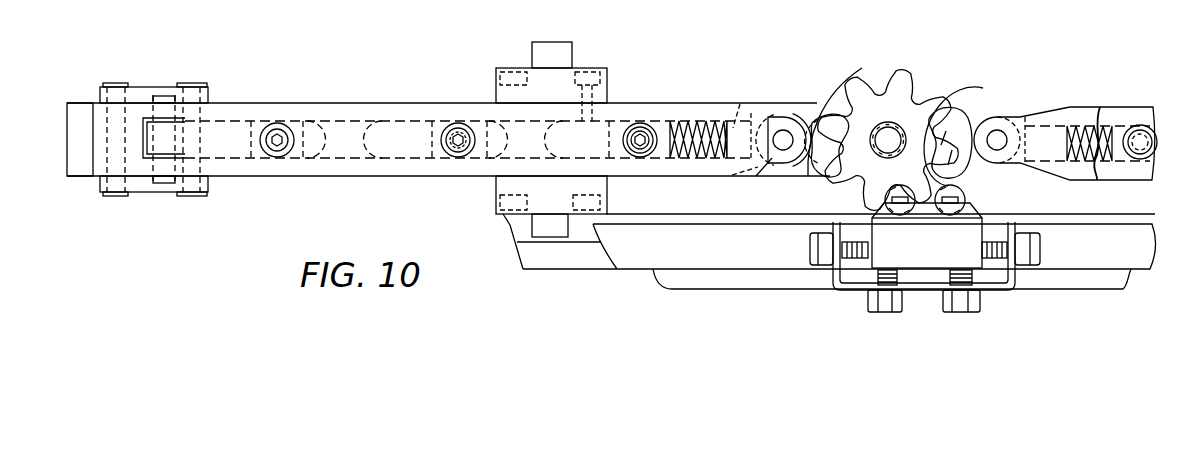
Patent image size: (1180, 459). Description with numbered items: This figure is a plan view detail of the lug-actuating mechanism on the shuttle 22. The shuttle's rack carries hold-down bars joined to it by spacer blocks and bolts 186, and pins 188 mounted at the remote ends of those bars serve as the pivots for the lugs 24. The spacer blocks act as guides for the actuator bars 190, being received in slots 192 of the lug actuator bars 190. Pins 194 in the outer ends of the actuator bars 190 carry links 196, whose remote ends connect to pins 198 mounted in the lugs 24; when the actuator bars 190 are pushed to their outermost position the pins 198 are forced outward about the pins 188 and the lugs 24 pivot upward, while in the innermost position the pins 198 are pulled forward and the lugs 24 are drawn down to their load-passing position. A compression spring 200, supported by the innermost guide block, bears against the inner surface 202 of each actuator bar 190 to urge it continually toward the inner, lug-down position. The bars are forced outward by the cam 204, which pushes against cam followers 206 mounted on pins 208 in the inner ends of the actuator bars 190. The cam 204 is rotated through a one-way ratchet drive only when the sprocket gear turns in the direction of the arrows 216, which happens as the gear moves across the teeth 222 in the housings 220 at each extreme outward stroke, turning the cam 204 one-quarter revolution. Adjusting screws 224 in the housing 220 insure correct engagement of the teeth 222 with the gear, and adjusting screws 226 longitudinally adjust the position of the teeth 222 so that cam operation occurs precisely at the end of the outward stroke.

The shuttle 22 is at (478, 190).
The lugs 24 is at (80, 116).
The bolts 186 is at (640, 128).
The pins 188 is at (165, 96).
The actuator bars 190 is at (1055, 130).
The slots 192 is at (376, 127).
The pins 194 is at (203, 84).
The links 196 is at (142, 90).
The pins 198 is at (117, 83).
The compression spring 200 is at (694, 120).
The inner surface 202 is at (743, 102).
The cam 204 is at (828, 110).
The cam followers 206 is at (802, 112).
The pins 208 is at (782, 130).
The arrows 216 is at (942, 110).
The housings 220 is at (1000, 290).
The teeth 222 is at (966, 202).
The adjusting screws 224 is at (948, 305).
The adjusting screws 226 is at (1038, 244).